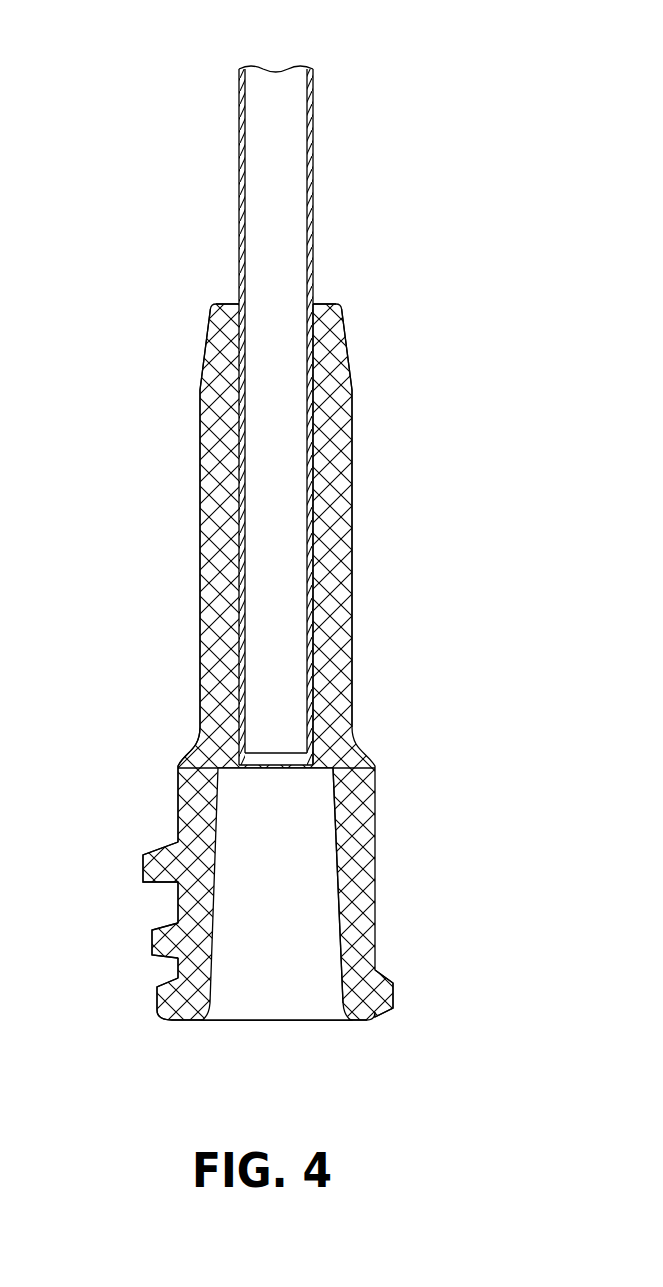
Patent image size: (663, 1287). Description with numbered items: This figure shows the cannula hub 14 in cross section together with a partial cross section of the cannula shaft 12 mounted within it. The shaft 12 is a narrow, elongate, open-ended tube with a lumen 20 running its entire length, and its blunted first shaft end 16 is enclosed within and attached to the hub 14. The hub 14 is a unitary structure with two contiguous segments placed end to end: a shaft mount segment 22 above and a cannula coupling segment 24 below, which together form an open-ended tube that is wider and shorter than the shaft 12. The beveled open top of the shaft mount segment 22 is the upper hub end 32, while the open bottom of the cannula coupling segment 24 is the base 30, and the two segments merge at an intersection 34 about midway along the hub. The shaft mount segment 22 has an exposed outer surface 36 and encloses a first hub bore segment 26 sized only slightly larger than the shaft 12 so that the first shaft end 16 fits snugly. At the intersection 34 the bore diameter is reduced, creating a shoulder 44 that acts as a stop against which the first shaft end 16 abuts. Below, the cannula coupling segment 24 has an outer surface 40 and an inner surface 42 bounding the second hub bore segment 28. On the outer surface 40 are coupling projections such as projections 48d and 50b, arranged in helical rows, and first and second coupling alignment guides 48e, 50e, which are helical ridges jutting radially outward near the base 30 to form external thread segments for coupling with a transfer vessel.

The cannula shaft 12 is at (313, 192).
The cannula hub 14 is at (352, 602).
The first shaft end 16 is at (308, 743).
The lumen 20 is at (283, 128).
The shaft mount segment 22 is at (352, 472).
The cannula coupling segment 24 is at (177, 805).
The first hub bore segment 26 is at (313, 550).
The second hub bore segment 28 is at (253, 948).
The base 30 is at (183, 1022).
The upper hub end 32 is at (327, 297).
The intersection 34 is at (187, 752).
The outer surface 36 is at (200, 456).
The outer surface 40 is at (177, 905).
The inner surface 42 is at (338, 920).
The shoulder 44 is at (300, 755).
The coupling projection 48d is at (143, 870).
The first coupling alignment guide 48e is at (157, 1002).
The coupling projection 50b is at (152, 943).
The second coupling alignment guide 50e is at (397, 997).